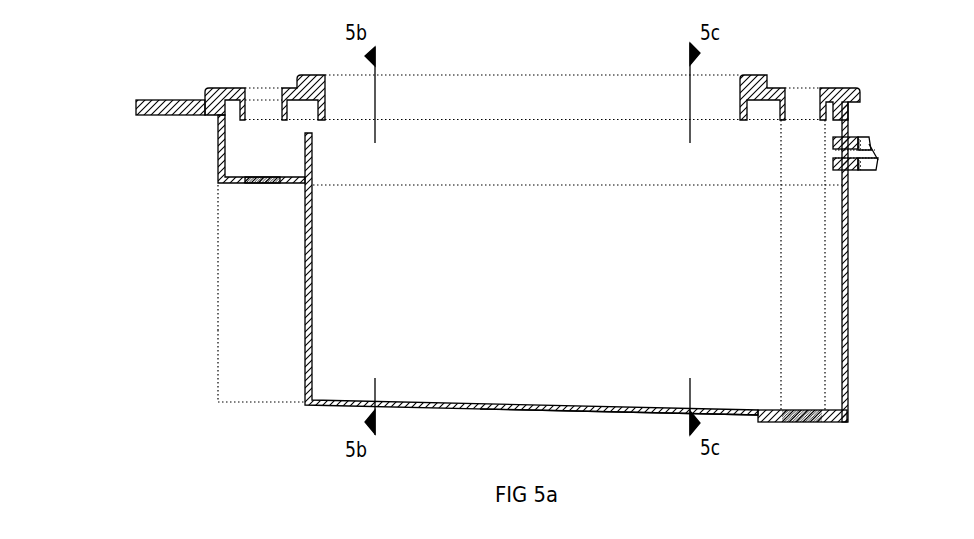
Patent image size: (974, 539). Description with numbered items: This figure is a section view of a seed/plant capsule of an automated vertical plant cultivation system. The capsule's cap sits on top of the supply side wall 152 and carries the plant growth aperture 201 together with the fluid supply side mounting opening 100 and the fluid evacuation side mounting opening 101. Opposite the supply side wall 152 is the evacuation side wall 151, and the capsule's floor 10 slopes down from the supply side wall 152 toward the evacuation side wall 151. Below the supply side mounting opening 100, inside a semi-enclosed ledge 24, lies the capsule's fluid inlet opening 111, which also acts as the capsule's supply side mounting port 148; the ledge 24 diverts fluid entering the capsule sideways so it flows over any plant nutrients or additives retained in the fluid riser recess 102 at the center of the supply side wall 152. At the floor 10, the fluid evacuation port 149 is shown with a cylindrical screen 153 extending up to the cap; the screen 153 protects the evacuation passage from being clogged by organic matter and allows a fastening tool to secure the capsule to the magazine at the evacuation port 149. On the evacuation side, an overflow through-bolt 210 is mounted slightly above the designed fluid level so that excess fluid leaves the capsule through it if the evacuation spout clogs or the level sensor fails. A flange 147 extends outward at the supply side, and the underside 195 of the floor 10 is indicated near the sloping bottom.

The mounting flange 147 is at (136, 107).
The fluid supply side mounting opening 100 is at (260, 88).
The fluid evacuation side mounting opening 101 is at (800, 88).
The plant growth aperture 201 is at (532, 75).
The semi-enclosed ledge 24 is at (230, 167).
The supply side mounting port 148 is at (181, 209).
The fluid inlet opening 111 is at (265, 184).
The fluid riser recess 102 is at (228, 320).
The supply side wall 152 is at (228, 370).
The floor 10 is at (535, 404).
The bottom surface 195 is at (642, 417).
The cylindrical screen 153 is at (781, 290).
The evacuation side wall 151 is at (848, 288).
The fluid evacuation port 149 is at (818, 424).
The overflow through-bolt 210 is at (883, 155).